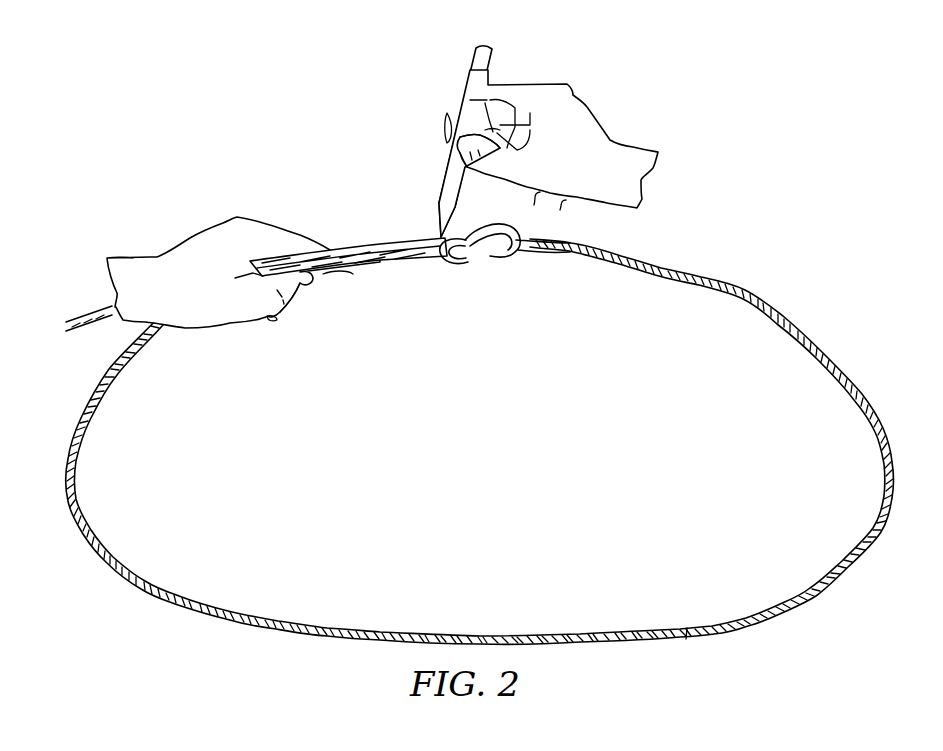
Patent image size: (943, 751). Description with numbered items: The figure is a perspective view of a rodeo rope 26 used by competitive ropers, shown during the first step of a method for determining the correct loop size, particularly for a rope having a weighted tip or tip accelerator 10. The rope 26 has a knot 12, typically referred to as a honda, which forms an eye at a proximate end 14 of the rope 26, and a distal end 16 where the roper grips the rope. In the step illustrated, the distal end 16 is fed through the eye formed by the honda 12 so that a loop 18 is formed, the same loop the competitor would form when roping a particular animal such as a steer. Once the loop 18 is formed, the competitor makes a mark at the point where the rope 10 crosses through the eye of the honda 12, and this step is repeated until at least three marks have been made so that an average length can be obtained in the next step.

The tip accelerator 10 is at (743, 294).
The honda knot 12 is at (478, 264).
The proximate end 14 is at (526, 228).
The distal end 16 is at (76, 316).
The loop 18 is at (495, 459).
The rodeo rope 26 is at (623, 643).